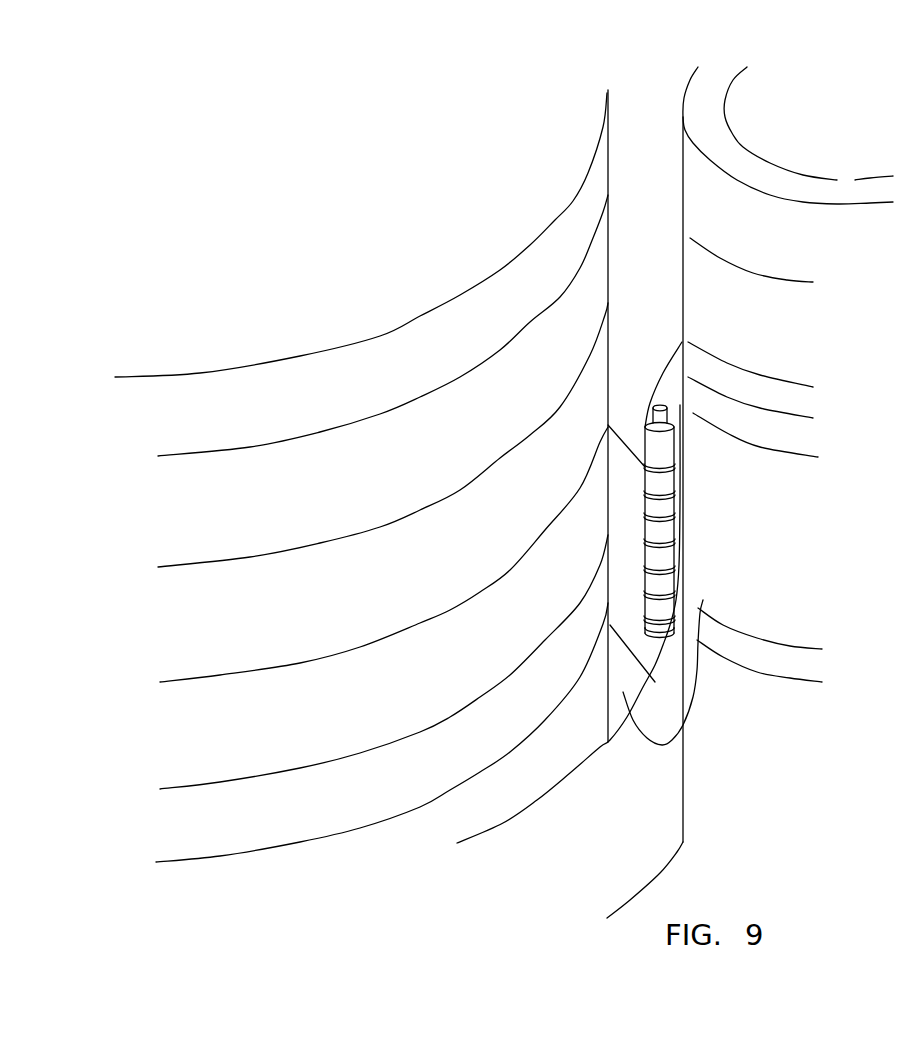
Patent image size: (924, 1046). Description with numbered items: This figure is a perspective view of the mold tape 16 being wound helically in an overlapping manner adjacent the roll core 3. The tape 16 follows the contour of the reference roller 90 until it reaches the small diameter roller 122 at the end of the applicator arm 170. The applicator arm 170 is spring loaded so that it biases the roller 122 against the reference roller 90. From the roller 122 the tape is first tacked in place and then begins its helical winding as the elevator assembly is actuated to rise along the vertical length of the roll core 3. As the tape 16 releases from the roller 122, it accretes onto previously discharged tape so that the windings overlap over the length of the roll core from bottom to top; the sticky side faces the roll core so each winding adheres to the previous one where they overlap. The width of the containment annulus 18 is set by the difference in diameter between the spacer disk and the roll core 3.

The roll core 3 is at (547, 320).
The reference roller 90 is at (693, 223).
The applicator arm 170 is at (661, 377).
The tape 16 is at (627, 490).
The small diameter roller 122 is at (652, 534).
The containment annulus 18 is at (703, 600).